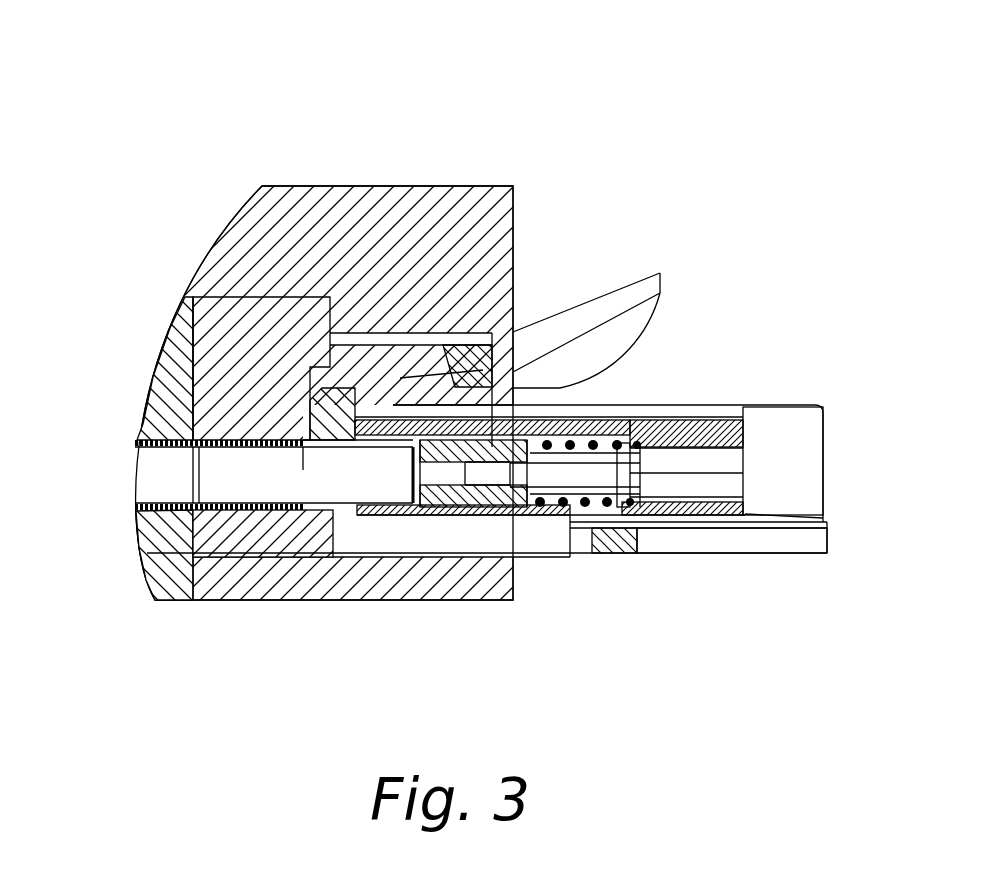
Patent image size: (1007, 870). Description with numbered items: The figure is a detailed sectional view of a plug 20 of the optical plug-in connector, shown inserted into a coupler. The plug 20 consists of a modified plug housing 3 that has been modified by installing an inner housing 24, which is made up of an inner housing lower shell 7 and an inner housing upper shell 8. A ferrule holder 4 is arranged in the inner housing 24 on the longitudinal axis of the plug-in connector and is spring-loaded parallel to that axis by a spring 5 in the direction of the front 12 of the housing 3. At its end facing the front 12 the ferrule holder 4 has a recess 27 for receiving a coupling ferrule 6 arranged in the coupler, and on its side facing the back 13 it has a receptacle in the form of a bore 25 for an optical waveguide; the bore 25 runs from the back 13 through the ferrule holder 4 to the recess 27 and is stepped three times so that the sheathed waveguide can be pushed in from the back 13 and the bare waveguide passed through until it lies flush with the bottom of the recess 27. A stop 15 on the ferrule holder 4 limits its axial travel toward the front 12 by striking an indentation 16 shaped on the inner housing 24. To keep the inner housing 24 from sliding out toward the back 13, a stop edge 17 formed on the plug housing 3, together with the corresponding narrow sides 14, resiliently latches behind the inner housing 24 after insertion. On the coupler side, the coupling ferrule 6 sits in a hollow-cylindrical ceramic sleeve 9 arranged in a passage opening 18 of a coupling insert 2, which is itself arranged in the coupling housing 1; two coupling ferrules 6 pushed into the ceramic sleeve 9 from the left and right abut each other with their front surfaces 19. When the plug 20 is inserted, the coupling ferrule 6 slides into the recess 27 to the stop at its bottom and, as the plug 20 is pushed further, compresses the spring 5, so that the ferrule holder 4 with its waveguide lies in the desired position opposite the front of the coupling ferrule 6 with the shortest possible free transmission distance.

The coupling housing 1 is at (252, 245).
The coupling insert 2 is at (243, 333).
The modified RJ-45 plug housing 3 is at (341, 395).
The ferrule holder 4 is at (490, 440).
The spring 5 is at (627, 407).
The coupling ferrule 6 is at (302, 400).
The inner housing lower shell 7 is at (407, 418).
The inner housing upper shell 8 is at (400, 515).
The ceramic sleeve 9 is at (135, 440).
The front 12 is at (301, 470).
The back 13 is at (827, 528).
The narrow side 14 is at (732, 407).
The stop 15 is at (455, 507).
The indentation 16 is at (668, 282).
The stop edge 17 is at (823, 510).
The passage opening 18 is at (265, 520).
The front surfaces 19 is at (218, 520).
The plug 20 is at (735, 543).
The inner housing 24 is at (742, 405).
The bore 25 is at (467, 508).
The recess 27 is at (425, 512).